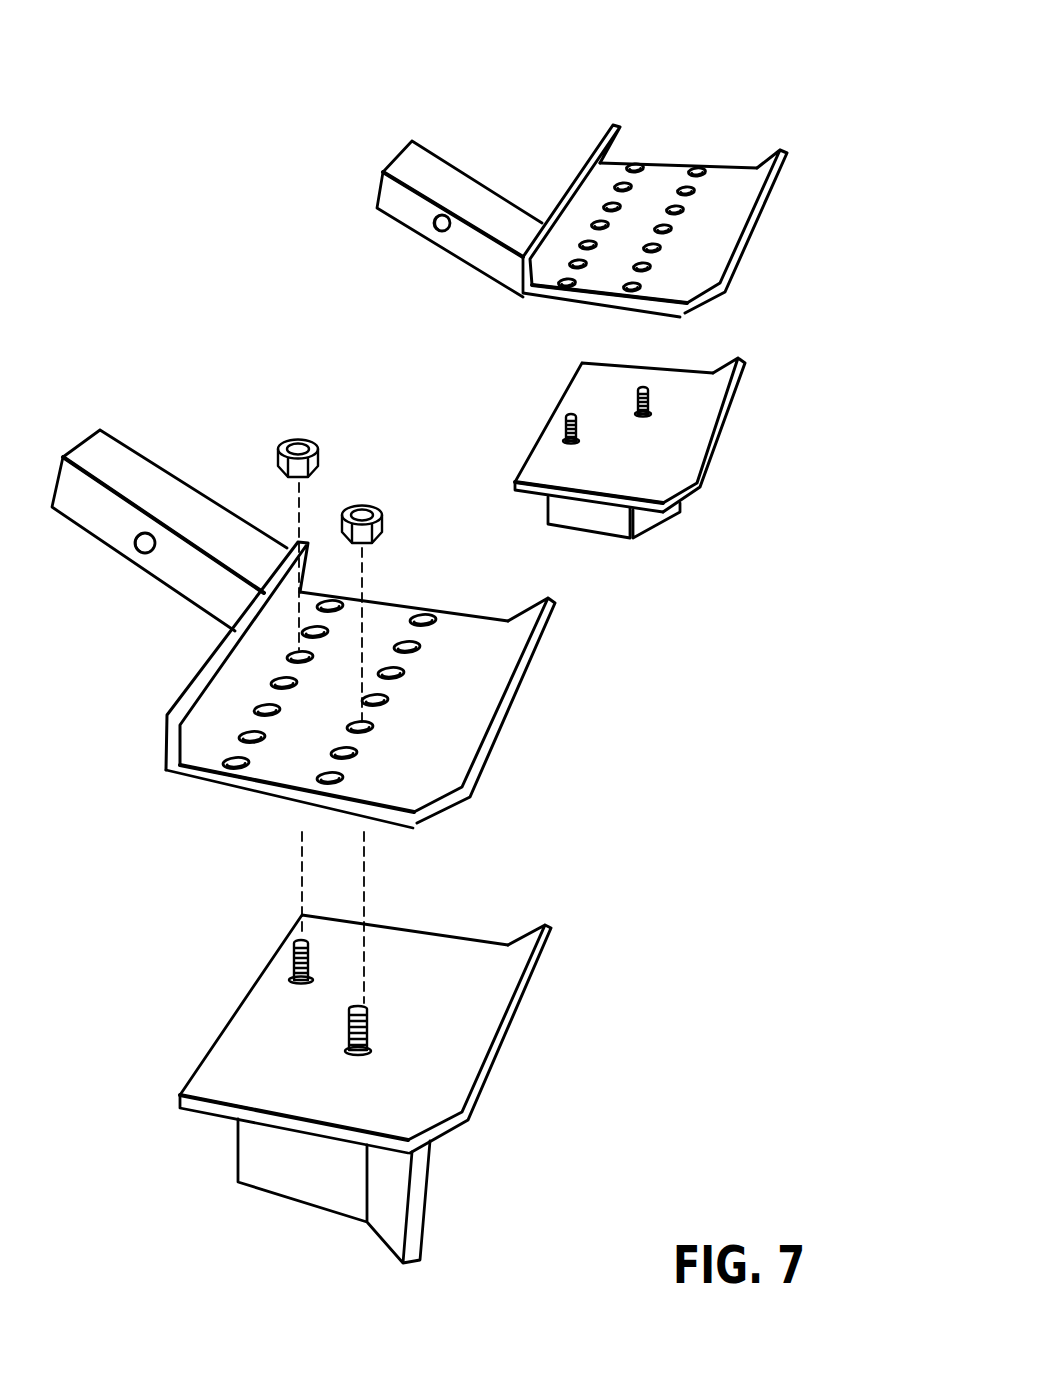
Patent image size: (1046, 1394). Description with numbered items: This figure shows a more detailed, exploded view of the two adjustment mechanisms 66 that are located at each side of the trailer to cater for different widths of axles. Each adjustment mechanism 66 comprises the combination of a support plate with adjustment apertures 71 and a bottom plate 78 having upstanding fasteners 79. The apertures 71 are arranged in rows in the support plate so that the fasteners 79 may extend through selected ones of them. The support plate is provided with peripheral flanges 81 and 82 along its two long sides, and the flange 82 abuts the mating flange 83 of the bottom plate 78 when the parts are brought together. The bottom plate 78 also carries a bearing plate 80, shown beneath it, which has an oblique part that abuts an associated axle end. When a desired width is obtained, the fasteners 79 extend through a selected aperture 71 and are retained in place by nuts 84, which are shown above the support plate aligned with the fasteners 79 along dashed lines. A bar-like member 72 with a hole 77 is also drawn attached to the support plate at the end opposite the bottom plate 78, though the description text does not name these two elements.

The adjustment mechanism 66 is at (762, 270).
The apertures 71 is at (423, 618).
The support bar 72 is at (457, 187).
The hole in support bar 77 is at (435, 227).
The bottom plate 78 is at (650, 447).
The upstanding fasteners 79 is at (635, 398).
The bearing plate 80 is at (647, 520).
The peripheral flange 81 is at (632, 137).
The peripheral flange 82 is at (740, 213).
The mating flange 83 is at (697, 450).
The nuts 84 is at (298, 440).